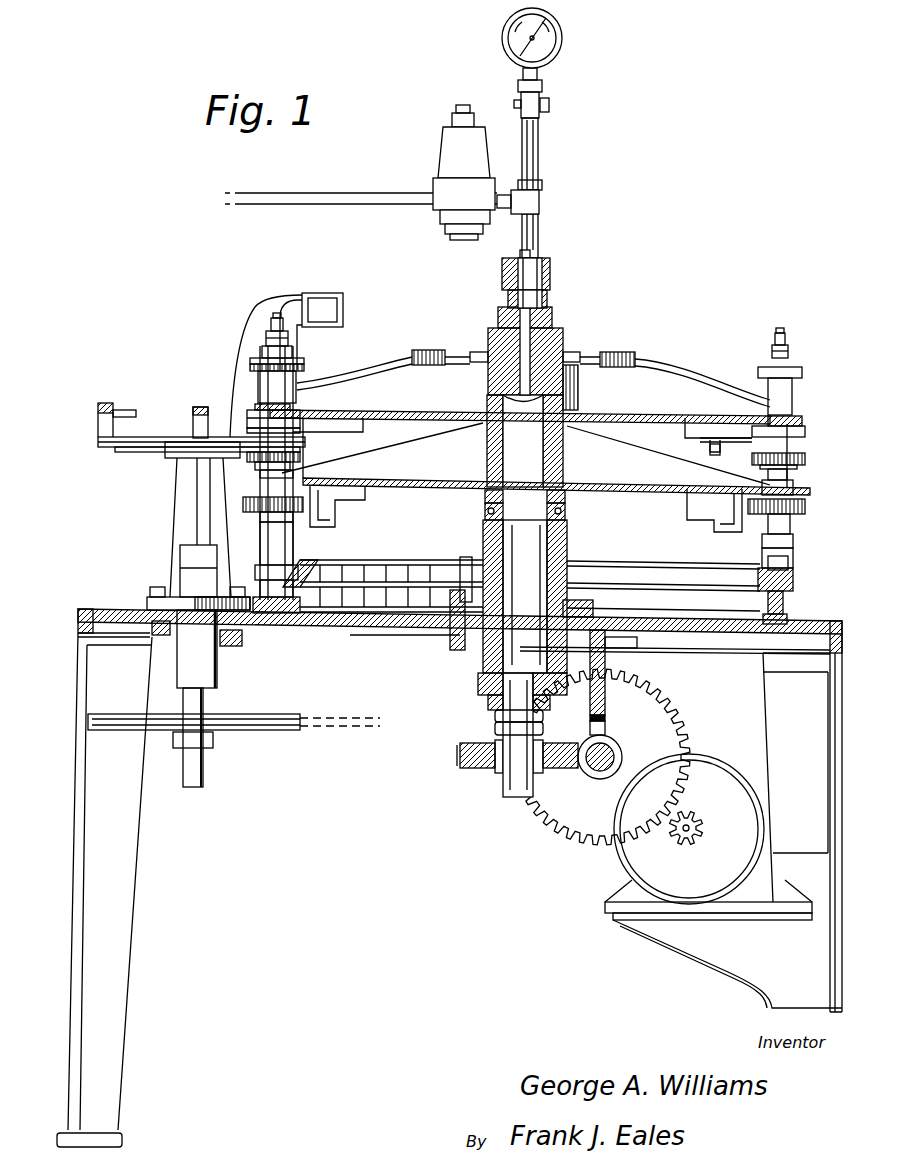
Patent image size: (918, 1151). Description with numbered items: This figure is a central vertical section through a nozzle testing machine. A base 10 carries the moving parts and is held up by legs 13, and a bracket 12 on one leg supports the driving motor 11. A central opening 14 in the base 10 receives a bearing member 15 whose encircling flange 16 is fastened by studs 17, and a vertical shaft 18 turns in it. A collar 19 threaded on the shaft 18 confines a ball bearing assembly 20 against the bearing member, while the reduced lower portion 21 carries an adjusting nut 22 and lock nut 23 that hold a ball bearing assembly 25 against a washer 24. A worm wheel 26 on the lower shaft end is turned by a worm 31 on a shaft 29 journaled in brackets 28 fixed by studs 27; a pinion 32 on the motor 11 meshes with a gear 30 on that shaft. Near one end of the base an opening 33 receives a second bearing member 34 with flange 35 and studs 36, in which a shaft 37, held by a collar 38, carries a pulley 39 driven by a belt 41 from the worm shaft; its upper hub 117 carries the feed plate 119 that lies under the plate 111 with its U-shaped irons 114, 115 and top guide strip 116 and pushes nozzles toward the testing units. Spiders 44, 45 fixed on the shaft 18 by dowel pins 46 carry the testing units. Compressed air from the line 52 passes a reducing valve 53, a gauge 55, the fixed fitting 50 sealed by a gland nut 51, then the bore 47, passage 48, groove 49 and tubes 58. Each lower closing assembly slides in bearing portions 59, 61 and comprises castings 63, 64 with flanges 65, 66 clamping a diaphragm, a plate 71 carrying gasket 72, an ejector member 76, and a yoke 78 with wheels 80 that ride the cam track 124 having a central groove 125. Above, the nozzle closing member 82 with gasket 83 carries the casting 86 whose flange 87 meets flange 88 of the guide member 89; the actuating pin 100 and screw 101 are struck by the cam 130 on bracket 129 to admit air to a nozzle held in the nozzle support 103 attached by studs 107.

The base 10 is at (385, 642).
The driving motor 11 is at (625, 880).
The bracket 12 is at (723, 944).
The legs 13 is at (112, 942).
The opening 14 is at (460, 648).
The bearing member 15 is at (567, 545).
The encircling flange 16 is at (593, 610).
The studs 17 is at (463, 575).
The vertical shaft 18 is at (525, 596).
The collar 19 is at (565, 498).
The ball bearing assembly 20 is at (565, 513).
The reduced lower portion 21 is at (545, 698).
The adjusting nut 22 is at (543, 716).
The lock nut 23 is at (495, 728).
The washer 24 is at (478, 686).
The ball bearing assembly 25 is at (488, 703).
The worm wheel 26 is at (495, 770).
The studs 27 is at (607, 650).
The brackets 28 is at (640, 646).
The shaft 29 is at (599, 779).
The gear 30 is at (688, 718).
The worm 31 is at (622, 752).
The pinion 32 is at (700, 820).
The opening 33 is at (230, 646).
The bearing member 34 is at (217, 672).
The encircling flange 35 is at (147, 604).
The studs 36 is at (156, 587).
The shaft 37 is at (203, 699).
The collar 38 is at (180, 552).
The pulley 39 is at (262, 730).
The belt 41 is at (338, 728).
The spider 44 is at (637, 483).
The spider 45 is at (636, 414).
The dowel pins 46 is at (478, 432).
The bore 47 is at (552, 312).
The passage 48 is at (578, 383).
The encircling groove 49 is at (580, 355).
The fitting 50 is at (550, 280).
The gland nut 51 is at (552, 265).
The compressed air line 52 is at (370, 193).
The reducing valve 53 is at (464, 172).
The gauge 55 is at (560, 60).
The tubes 58 is at (450, 355).
The bearing portion 59 is at (260, 474).
The bearing portion 61 is at (260, 540).
The casting 63 is at (787, 476).
The casting 64 is at (540, 200).
The flange 65 is at (250, 500).
The flange 66 is at (260, 518).
The plate 71 is at (290, 466).
The rubber gasket 72 is at (300, 454).
The ejector member 76 is at (793, 574).
The yoke 78 is at (793, 559).
The wheels 80 is at (255, 572).
The nozzle closing member 82 is at (802, 420).
The rubber gasket 83 is at (302, 419).
The casting 86 is at (258, 382).
The flange 87 is at (304, 368).
The flange 88 is at (304, 361).
The guide member 89 is at (292, 350).
The plunger actuating pin 100 is at (266, 338).
The adjustable screw 101 is at (278, 312).
The nozzle supports 103 is at (805, 440).
The studs 107 is at (720, 452).
The plate 111 is at (168, 437).
The U-shaped iron 114 is at (106, 403).
The U-shaped iron 115 is at (202, 407).
The top guide strip 116 is at (128, 410).
The hub 117 is at (182, 476).
The feed plate 119 is at (128, 452).
The cam track 124 is at (783, 592).
The central groove 125 is at (305, 568).
The bracket 129 is at (243, 345).
The cam 130 is at (311, 331).